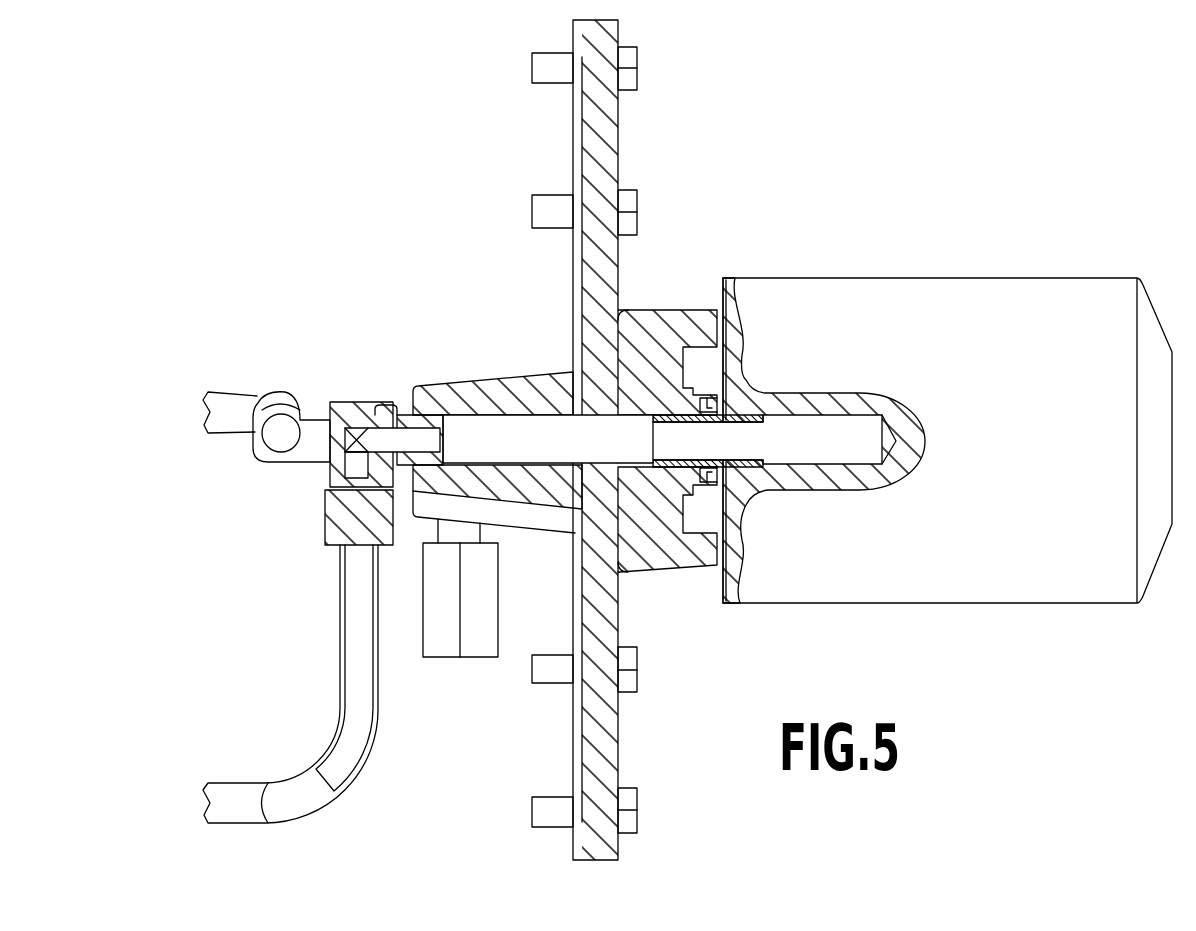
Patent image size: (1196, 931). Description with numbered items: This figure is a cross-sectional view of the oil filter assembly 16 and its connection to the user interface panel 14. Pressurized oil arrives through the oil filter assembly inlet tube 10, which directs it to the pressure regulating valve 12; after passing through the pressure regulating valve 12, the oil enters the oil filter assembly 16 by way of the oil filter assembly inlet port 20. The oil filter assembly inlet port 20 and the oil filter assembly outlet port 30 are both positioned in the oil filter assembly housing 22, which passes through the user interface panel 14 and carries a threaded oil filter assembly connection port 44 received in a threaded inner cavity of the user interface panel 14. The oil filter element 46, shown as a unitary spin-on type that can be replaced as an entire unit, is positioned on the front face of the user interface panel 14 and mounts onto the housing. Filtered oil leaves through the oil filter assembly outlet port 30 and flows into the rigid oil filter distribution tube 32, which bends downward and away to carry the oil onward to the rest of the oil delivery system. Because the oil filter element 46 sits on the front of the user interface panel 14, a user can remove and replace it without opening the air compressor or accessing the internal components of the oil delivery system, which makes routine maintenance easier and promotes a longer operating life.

The oil filter assembly inlet tube 10 is at (233, 405).
The pressure regulating valve 12 is at (477, 625).
The user interface panel 14 is at (622, 118).
The oil filter assembly 16 is at (943, 210).
The oil filter assembly inlet port 20 is at (290, 403).
The oil filter assembly housing 22 is at (485, 382).
The oil filter assembly outlet port 30 is at (357, 405).
The oil filter distribution tube 32 is at (233, 797).
The oil filter assembly connection port 44 is at (737, 442).
The oil filter element 46 is at (1018, 312).